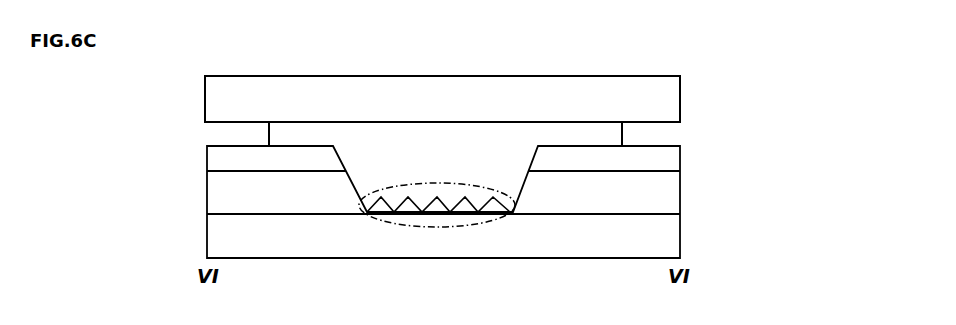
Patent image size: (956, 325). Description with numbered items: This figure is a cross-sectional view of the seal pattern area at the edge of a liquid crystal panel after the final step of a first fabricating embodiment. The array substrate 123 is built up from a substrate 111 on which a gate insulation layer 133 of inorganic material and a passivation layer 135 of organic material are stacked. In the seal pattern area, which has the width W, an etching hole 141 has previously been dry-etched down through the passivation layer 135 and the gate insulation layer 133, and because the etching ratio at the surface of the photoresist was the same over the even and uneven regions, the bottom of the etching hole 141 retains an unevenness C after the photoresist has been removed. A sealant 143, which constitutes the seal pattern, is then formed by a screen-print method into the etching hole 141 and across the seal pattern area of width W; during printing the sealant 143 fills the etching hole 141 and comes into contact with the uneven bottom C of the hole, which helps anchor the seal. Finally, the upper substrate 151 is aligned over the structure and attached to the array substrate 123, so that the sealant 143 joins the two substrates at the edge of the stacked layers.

The upper substrate 151 is at (672, 97).
The sealant 143 is at (626, 131).
The array substrate 123 is at (518, 202).
The passivation layer 135 is at (642, 167).
The gate insulation layer 133 is at (665, 201).
The substrate 111 is at (726, 248).
The etching hole 141 is at (483, 145).
The unevenness C is at (430, 183).
The width W is at (617, 281).